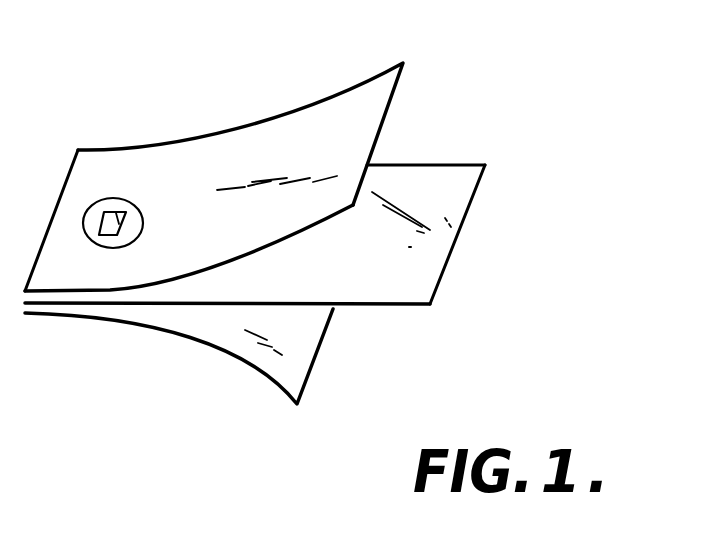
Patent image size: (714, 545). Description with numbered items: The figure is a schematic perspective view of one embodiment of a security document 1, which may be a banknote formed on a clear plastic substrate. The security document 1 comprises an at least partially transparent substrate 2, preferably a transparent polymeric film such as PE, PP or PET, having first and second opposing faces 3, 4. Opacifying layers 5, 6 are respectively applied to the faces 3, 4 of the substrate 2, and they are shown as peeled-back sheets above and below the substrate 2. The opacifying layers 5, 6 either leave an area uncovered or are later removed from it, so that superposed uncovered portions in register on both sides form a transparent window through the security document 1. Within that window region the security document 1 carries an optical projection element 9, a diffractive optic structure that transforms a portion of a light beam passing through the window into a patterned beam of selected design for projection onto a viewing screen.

The security document 1 is at (452, 123).
The substrate 2 is at (407, 291).
The first face 3 is at (445, 207).
The second face 4 is at (460, 234).
The opacifying layer 5 is at (210, 168).
The opacifying layer 6 is at (252, 348).
The optical projection element 9 is at (116, 212).